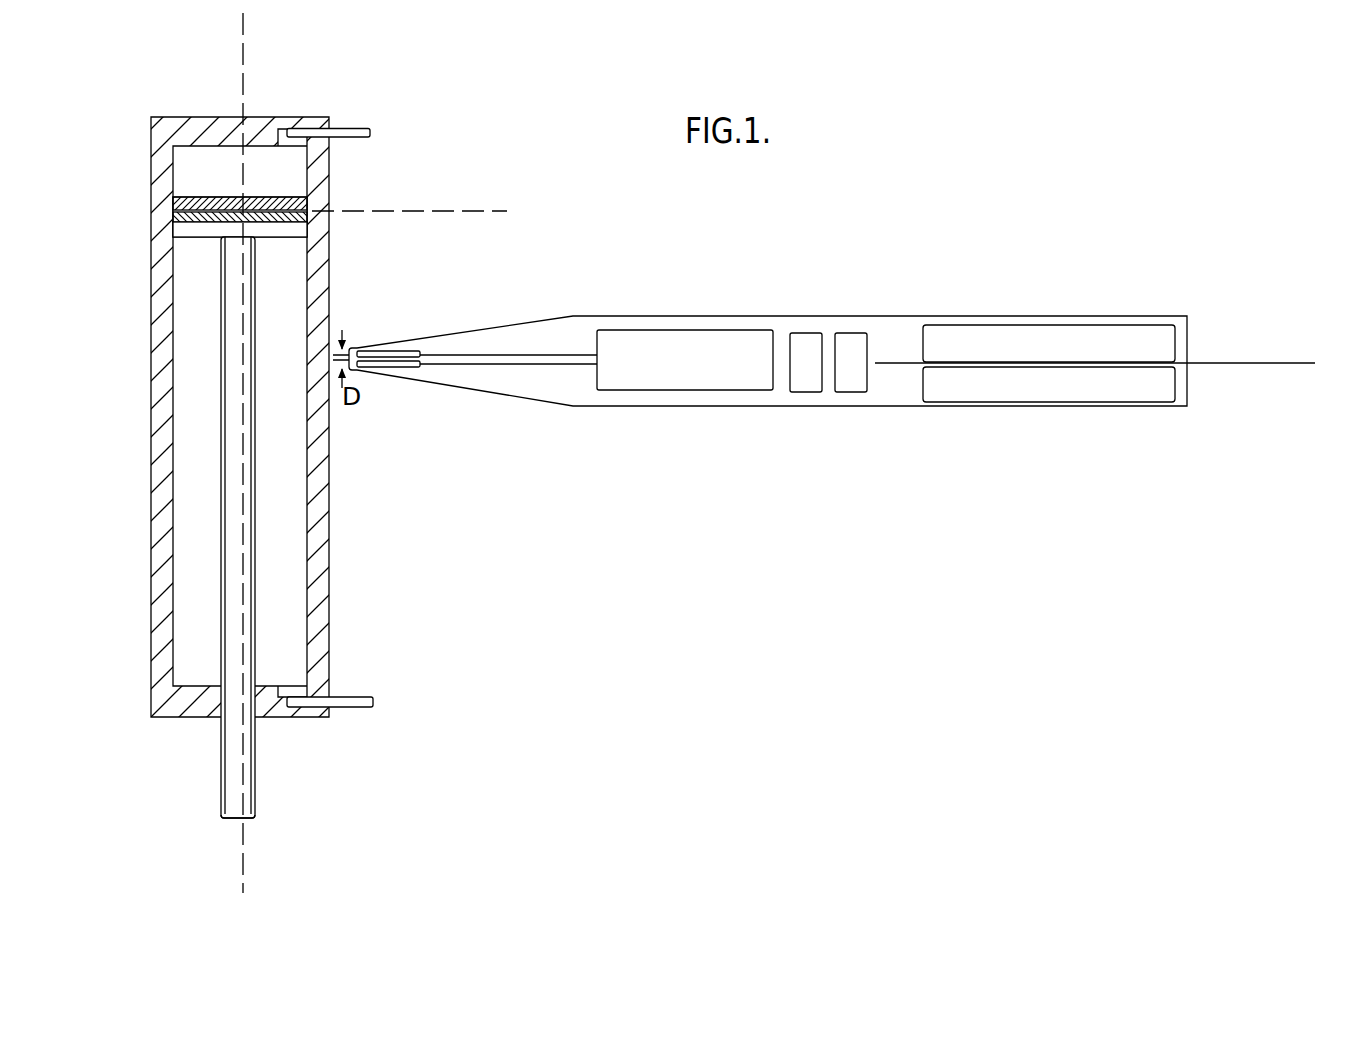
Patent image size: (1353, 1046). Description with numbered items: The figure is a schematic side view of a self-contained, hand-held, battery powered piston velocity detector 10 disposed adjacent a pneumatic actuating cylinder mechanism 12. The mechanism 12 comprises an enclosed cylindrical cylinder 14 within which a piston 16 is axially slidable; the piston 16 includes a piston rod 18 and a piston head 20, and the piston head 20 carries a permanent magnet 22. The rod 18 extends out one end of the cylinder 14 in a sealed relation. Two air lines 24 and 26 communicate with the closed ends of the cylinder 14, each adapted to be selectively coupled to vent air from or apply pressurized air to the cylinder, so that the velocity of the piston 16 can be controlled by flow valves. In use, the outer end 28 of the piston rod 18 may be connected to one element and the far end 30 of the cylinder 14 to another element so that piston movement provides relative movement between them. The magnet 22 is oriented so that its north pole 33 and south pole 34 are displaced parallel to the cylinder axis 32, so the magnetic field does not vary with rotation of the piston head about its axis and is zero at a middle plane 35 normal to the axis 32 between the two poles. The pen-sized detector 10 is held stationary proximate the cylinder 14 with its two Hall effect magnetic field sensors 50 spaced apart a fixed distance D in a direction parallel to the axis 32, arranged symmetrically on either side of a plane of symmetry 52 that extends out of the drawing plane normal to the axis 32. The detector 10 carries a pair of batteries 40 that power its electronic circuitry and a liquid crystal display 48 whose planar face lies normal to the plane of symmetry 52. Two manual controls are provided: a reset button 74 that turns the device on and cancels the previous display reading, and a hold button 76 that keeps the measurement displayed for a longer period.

The piston velocity detector 10 is at (821, 426).
The pneumatic actuating cylinder mechanism 12 is at (412, 110).
The cylinder 14 is at (181, 121).
The piston 16 is at (265, 331).
The piston rod 18 is at (255, 770).
The piston head 20 is at (302, 231).
The permanent magnet 22 is at (293, 194).
The air line 24 is at (347, 127).
The air line 26 is at (350, 697).
The outer end 28 is at (252, 819).
The far end 30 is at (245, 115).
The cylinder axis 32 is at (243, 22).
The north pole 33 is at (207, 196).
The south pole 34 is at (193, 223).
The middle plane 35 is at (488, 212).
The batteries 40 is at (987, 333).
The liquid crystal display 48 is at (614, 390).
The magnetic field sensors 50 is at (378, 368).
The plane of symmetry 52 is at (1237, 360).
The reset button 74 is at (850, 337).
The hold button 76 is at (807, 337).